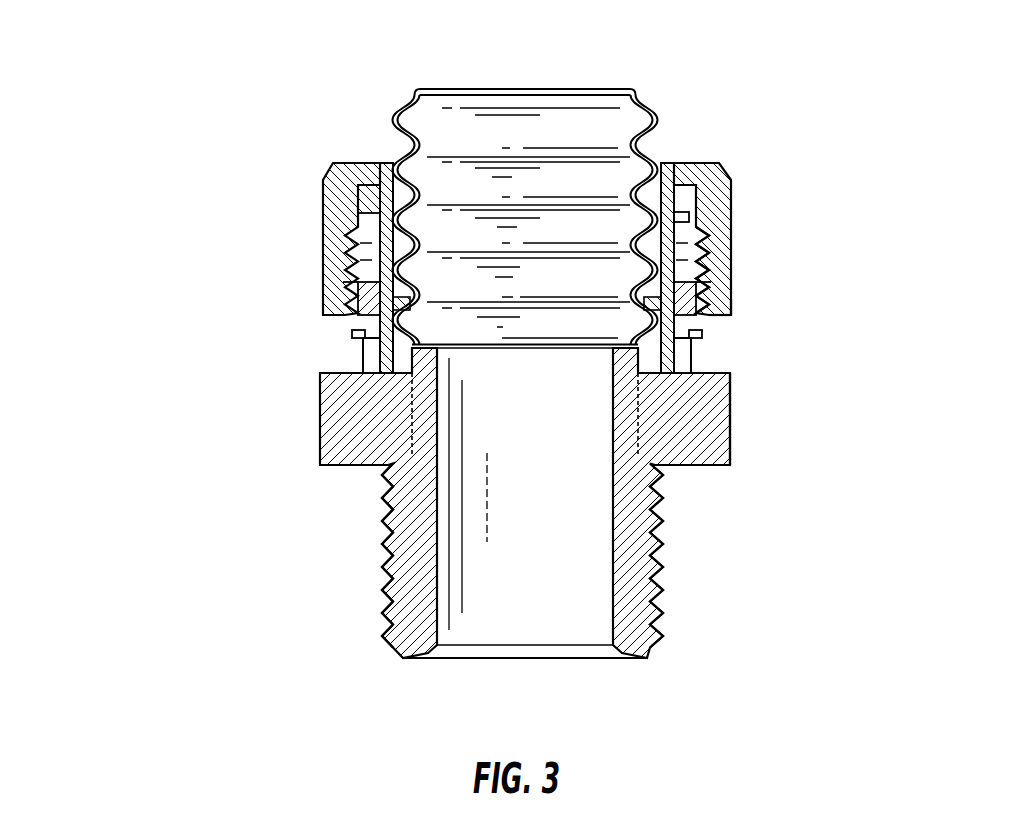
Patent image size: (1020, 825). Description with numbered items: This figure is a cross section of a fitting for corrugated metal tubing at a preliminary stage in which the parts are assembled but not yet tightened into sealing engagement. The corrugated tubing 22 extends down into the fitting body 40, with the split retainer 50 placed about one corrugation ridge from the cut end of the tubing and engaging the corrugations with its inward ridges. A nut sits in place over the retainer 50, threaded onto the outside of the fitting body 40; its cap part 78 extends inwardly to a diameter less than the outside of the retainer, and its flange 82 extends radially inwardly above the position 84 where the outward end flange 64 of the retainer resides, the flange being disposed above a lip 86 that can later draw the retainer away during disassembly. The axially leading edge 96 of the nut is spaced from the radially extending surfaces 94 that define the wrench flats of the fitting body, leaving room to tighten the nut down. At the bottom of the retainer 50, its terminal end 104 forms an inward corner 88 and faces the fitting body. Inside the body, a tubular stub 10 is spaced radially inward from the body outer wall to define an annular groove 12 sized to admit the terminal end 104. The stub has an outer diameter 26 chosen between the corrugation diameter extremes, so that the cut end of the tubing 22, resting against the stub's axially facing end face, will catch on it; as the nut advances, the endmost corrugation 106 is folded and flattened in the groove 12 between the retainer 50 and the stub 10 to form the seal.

The tubular stub 10 is at (420, 365).
The annular groove 12 is at (357, 349).
The tubing 22 is at (642, 107).
The outer diameter 26 is at (626, 430).
The fitting body 40 is at (352, 557).
The split retainer 50 is at (708, 258).
The end 64 is at (680, 213).
The cap part 78 is at (327, 167).
The flange 82 is at (698, 162).
The position 84 is at (358, 185).
The lip 86 is at (360, 217).
The inward corner 88 is at (652, 283).
The radially extending surfaces 94 is at (708, 376).
The axially leading edge 96 is at (724, 317).
The terminal end 104 is at (343, 283).
The endmost corrugation 106 is at (625, 331).